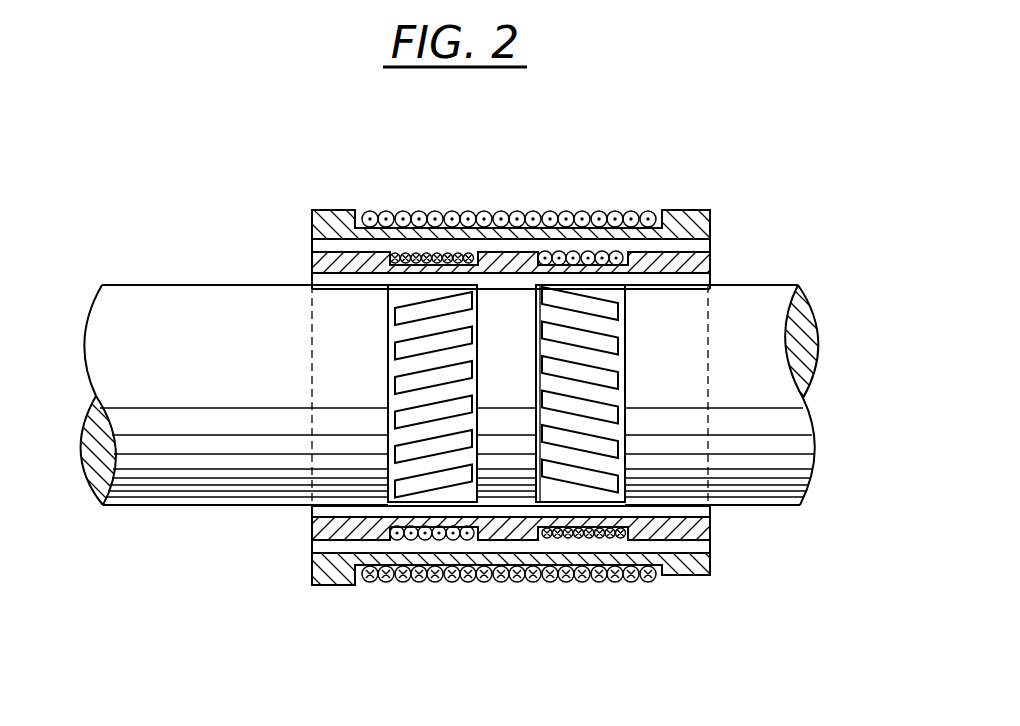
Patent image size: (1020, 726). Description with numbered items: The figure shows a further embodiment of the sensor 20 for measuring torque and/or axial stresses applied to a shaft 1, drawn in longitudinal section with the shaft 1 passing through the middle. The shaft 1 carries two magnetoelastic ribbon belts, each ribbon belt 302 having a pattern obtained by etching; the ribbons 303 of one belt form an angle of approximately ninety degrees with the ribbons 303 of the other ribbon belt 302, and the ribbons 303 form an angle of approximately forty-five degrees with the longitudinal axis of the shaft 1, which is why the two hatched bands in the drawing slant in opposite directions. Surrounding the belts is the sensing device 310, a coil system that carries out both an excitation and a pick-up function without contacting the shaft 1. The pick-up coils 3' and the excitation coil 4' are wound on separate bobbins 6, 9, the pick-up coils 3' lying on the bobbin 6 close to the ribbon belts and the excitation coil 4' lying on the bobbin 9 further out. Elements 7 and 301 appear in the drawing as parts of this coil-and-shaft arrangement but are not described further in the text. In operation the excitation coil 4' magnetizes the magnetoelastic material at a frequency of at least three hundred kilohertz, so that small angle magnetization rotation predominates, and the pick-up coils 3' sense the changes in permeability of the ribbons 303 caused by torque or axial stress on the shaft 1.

The shaft 1 is at (790, 500).
The sensor 20 is at (510, 365).
The ferrule/plug member 301 is at (495, 393).
The ribbon belt 302 is at (388, 430).
The ribbons 303 is at (388, 407).
The sensing device 310 is at (714, 216).
The excitation coil 4' is at (509, 184).
The sealing ring 7 is at (428, 256).
The pick-up coils 3' is at (515, 585).
The bobbin 6 is at (710, 550).
The bobbin 9 is at (682, 568).